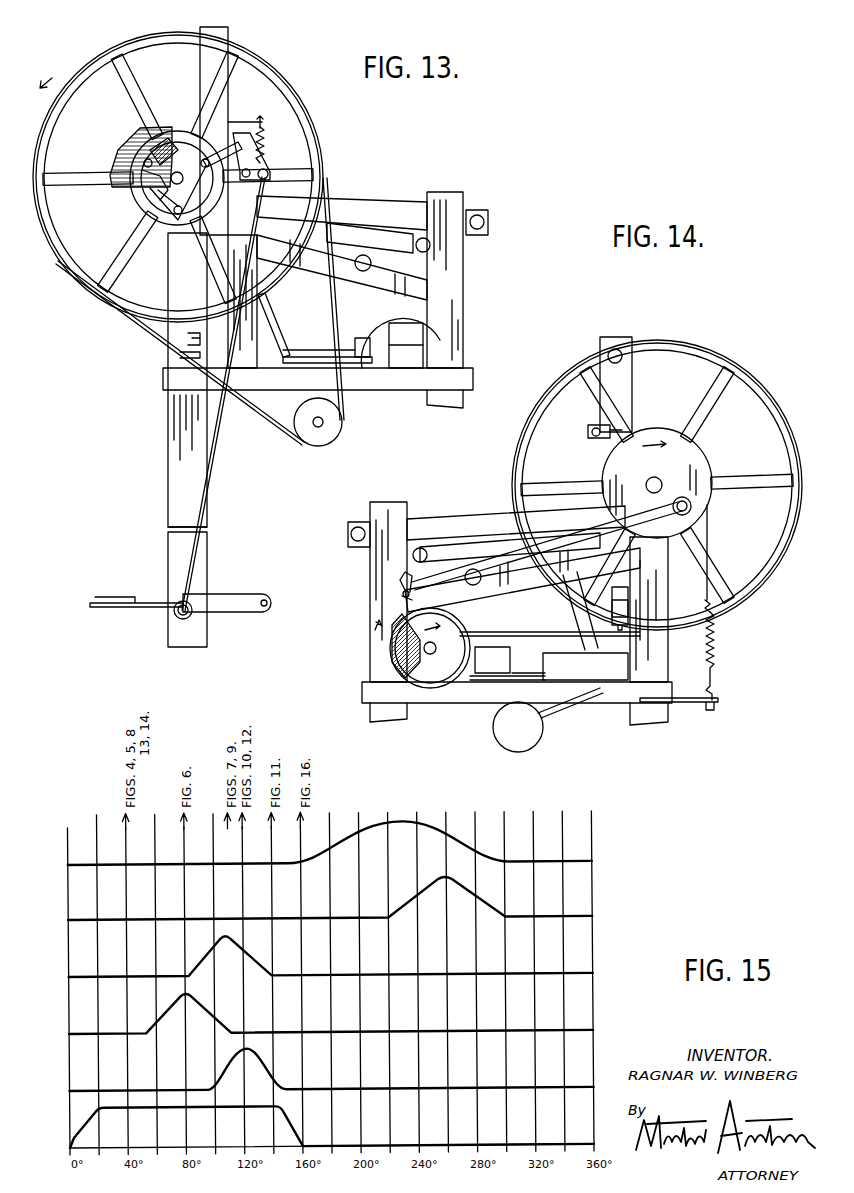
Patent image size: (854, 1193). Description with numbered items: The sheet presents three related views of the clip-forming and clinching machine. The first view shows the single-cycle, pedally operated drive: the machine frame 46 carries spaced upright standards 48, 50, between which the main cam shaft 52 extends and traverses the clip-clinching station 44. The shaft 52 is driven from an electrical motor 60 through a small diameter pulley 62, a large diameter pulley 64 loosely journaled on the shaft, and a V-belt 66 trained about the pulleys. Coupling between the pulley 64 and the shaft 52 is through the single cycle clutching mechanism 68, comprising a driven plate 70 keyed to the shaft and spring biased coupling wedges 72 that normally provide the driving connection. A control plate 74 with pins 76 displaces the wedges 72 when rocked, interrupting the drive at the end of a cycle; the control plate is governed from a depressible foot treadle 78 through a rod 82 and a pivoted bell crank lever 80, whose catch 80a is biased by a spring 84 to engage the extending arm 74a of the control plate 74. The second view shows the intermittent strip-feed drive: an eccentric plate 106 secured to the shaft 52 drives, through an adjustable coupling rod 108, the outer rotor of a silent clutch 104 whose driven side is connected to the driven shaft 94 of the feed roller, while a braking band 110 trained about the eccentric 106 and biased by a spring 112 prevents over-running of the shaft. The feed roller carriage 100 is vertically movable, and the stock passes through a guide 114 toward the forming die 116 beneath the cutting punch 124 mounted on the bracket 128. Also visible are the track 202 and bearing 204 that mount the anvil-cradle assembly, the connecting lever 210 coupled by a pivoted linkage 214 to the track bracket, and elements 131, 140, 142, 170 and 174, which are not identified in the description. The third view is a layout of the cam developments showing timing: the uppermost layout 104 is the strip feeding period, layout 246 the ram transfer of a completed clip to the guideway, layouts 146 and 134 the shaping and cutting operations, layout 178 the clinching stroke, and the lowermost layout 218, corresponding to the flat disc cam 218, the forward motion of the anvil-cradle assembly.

In FIG. 13, the clip clinching station 44 is at (181, 349).
In FIG. 13, the frame 46 is at (420, 392).
In FIG. 14, the frame 46 is at (618, 704).
In FIG. 14, the upright standard 48 is at (668, 668).
In FIG. 13, the upright standard 50 is at (212, 349).
In FIG. 14, the main cam shaft 52 is at (648, 482).
In FIG. 13, the electrical motor 60 is at (343, 428).
In FIG. 14, the electrical motor 60 is at (494, 731).
In FIG. 13, the small diameter pulley 62 is at (316, 430).
In FIG. 13, the large diameter pulley 64 is at (272, 74).
In FIG. 14, the large diameter pulley 64 is at (737, 373).
In FIG. 13, the V-belt 66 is at (280, 408).
In FIG. 14, the V-belt 66 is at (582, 722).
In FIG. 13, the single cycle clutching mechanism 68 is at (152, 198).
In FIG. 13, the driven plate 70 is at (146, 200).
In FIG. 13, the spring biased coupling wedges 72 is at (140, 143).
In FIG. 13, the control plate 74 is at (182, 222).
In FIG. 13, the extending arm 74a is at (215, 128).
In FIG. 13, the pins 76 is at (143, 162).
In FIG. 13, the depressible foot treadle 78 is at (118, 600).
In FIG. 13, the pivoted bell crank lever 80 is at (262, 146).
In FIG. 13, the catch 80a is at (230, 121).
In FIG. 13, the rod 82 is at (214, 448).
In FIG. 13, the spring 84 is at (268, 157).
In FIG. 14, the driven shaft 94 is at (436, 648).
In FIG. 13, the vertically-movable carriage 100 is at (406, 323).
In FIG. 13, the silent clutch 104 is at (372, 318).
In FIG. 14, the silent clutch 104 is at (438, 688).
In FIG. 15, the silent clutch 104 is at (468, 832).
In FIG. 14, the eccentric plate 106 is at (700, 464).
In FIG. 14, the coupling rod 108 is at (590, 535).
In FIG. 14, the braking band 110 is at (710, 540).
In FIG. 14, the spring 112 is at (714, 655).
In FIG. 14, the guide 114 is at (544, 630).
In FIG. 14, the forming die 116 is at (610, 652).
In FIG. 14, the cutting punch 124 is at (616, 587).
In FIG. 14, the bracket 128 is at (614, 606).
In FIG. 13, the lever arm 131 is at (363, 272).
In FIG. 14, the lever arm 131 is at (478, 576).
In FIG. 15, the layout 134 is at (220, 1020).
In FIG. 13, the arm 140 is at (374, 204).
In FIG. 14, the arm 140 is at (436, 518).
In FIG. 13, the pivot bracket 142 is at (490, 214).
In FIG. 14, the pivot bracket 142 is at (351, 534).
In FIG. 15, the layout 146 is at (254, 956).
In FIG. 13, the lever 170 is at (384, 230).
In FIG. 14, the lever 170 is at (466, 546).
In FIG. 13, the pivot 174 is at (431, 245).
In FIG. 14, the pivot 174 is at (416, 548).
In FIG. 15, the fifth layout 178 is at (272, 1072).
In FIG. 13, the track 202 is at (352, 366).
In FIG. 14, the track 202 is at (498, 682).
In FIG. 13, the bearing 204 is at (302, 366).
In FIG. 14, the bearing 204 is at (532, 682).
In FIG. 13, the connecting lever 210 is at (280, 335).
In FIG. 14, the connecting lever 210 is at (576, 612).
In FIG. 13, the pivoted linkage 214 is at (298, 348).
In FIG. 14, the pivoted linkage 214 is at (510, 660).
In FIG. 15, the flat disc cam 218 is at (296, 1126).
In FIG. 15, the second layout 246 is at (478, 900).